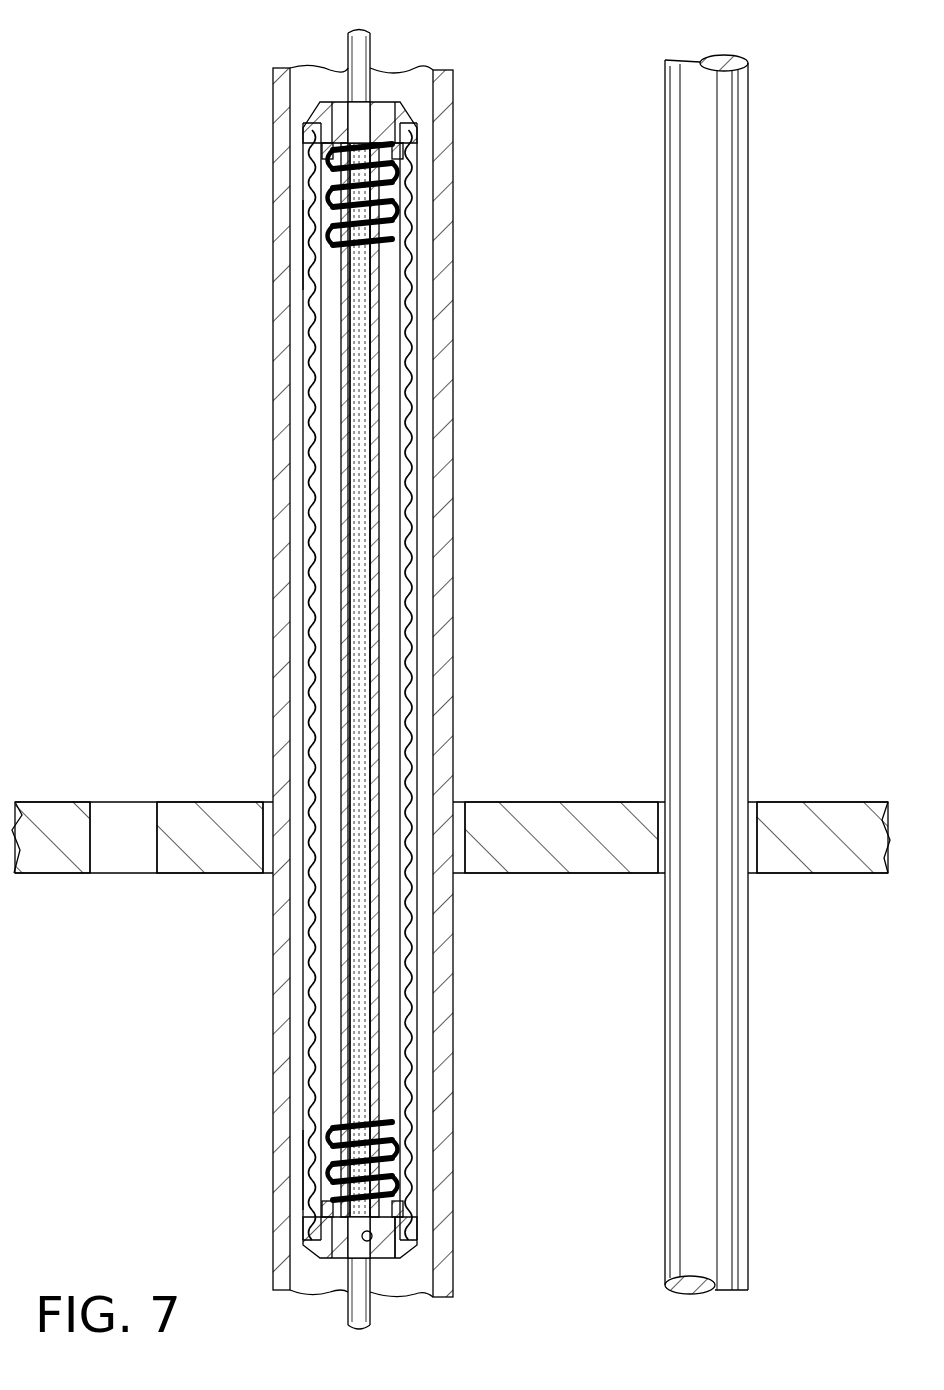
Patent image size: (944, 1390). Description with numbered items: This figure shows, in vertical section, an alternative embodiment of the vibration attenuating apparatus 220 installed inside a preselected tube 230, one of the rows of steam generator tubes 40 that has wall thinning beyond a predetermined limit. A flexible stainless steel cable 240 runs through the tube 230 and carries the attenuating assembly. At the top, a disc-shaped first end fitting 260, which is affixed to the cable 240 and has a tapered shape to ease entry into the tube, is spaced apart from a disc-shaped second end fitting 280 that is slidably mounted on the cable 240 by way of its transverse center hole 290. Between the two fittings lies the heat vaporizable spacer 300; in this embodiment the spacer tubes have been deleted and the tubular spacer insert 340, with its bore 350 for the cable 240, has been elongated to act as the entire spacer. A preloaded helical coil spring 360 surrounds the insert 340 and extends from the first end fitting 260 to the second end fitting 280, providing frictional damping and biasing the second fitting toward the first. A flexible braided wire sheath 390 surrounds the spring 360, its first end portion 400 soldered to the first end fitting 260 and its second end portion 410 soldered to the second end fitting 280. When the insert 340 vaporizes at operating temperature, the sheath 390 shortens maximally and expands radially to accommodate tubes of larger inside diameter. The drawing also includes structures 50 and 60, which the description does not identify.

The tube 40 is at (722, 120).
The plate 50 is at (808, 873).
The opening in plate 60 is at (752, 822).
The apparatus for attenuating vibration 220 is at (297, 245).
The preselected tube 230 is at (273, 85).
The flexible cable 240 is at (365, 42).
The first end fitting 260 is at (395, 108).
The second end fitting 280 is at (417, 1258).
The transverse center hole 290 is at (400, 1233).
The heat vaporizable spacer 300 is at (380, 455).
The tubular spacer insert 340 is at (380, 508).
The bore 350 is at (313, 300).
The helical coil spring 360 is at (410, 1128).
The flexible braided sheath 390 is at (317, 390).
The first end portion 400 is at (322, 157).
The second end portion 410 is at (310, 1168).